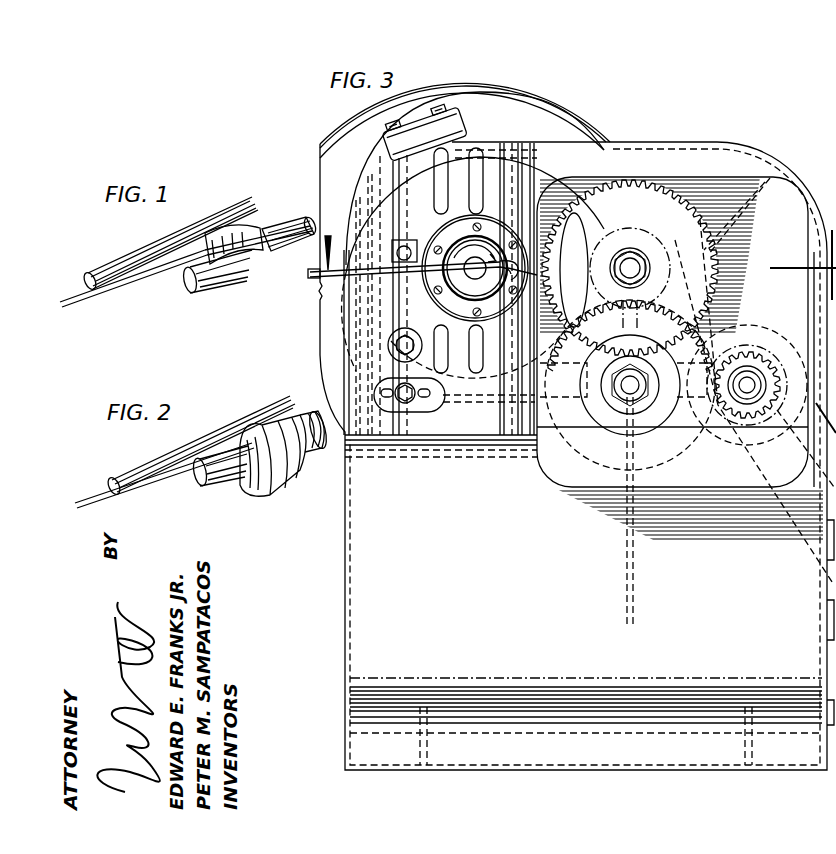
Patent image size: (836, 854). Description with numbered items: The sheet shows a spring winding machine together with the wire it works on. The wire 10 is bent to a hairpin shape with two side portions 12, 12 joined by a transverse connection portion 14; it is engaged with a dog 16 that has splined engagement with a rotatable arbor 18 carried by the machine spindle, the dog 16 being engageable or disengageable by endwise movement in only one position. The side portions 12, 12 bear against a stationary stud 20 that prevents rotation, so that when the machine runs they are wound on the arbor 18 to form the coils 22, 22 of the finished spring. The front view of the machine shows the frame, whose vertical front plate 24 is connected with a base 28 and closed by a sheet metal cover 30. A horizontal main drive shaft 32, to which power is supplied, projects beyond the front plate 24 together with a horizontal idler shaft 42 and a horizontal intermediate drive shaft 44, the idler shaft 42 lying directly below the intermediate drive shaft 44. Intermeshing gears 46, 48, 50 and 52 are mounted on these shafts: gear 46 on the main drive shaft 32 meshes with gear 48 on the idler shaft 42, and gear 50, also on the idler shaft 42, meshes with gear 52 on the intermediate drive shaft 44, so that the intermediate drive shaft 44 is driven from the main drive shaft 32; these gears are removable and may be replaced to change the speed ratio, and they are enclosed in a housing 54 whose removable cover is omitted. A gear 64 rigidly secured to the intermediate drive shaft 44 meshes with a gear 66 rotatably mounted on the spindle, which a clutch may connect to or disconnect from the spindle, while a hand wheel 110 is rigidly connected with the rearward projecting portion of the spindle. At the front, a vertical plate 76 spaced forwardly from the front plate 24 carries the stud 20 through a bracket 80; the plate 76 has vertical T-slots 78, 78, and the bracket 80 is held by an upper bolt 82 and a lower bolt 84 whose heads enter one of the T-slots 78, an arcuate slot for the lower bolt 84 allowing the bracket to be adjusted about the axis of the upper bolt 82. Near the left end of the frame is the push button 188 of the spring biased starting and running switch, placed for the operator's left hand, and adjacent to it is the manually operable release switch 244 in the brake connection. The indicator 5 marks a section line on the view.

In FIG. 3, the section line indicator 5 is at (333, 241).
In FIG. 1, the wire 10 is at (163, 279).
In FIG. 2, the wire 10 is at (80, 507).
In FIG. 3, the wire 10 is at (412, 266).
In FIG. 1, the side portions 12 is at (188, 248).
In FIG. 2, the side portions 12 is at (175, 475).
In FIG. 1, the transverse connection portion 14 is at (273, 252).
In FIG. 1, the dog 16 is at (255, 287).
In FIG. 2, the dog 16 is at (302, 490).
In FIG. 3, the dog 16 is at (537, 275).
In FIG. 1, the arbor 18 is at (188, 296).
In FIG. 2, the arbor 18 is at (220, 493).
In FIG. 3, the arbor 18 is at (477, 282).
In FIG. 1, the stud 20 is at (120, 258).
In FIG. 2, the stud 20 is at (138, 470).
In FIG. 3, the stud 20 is at (399, 250).
In FIG. 2, the coils 22 is at (253, 490).
In FIG. 3, the front plate 24 is at (712, 150).
In FIG. 3, the base 28 is at (345, 580).
In FIG. 3, the cover 30 is at (645, 142).
In FIG. 3, the main drive shaft 32 is at (748, 382).
In FIG. 3, the idler shaft 42 is at (628, 398).
In FIG. 3, the intermediate drive shaft 44 is at (633, 265).
In FIG. 3, the gear 46 is at (742, 350).
In FIG. 3, the gear 48 is at (658, 323).
In FIG. 3, the gear 50 is at (607, 378).
In FIG. 3, the gear 52 is at (690, 214).
In FIG. 3, the housing 54 is at (616, 178).
In FIG. 3, the gear 64 is at (614, 232).
In FIG. 3, the gear 66 is at (497, 158).
In FIG. 3, the vertical plate 76 is at (512, 440).
In FIG. 3, the T-slots 78 is at (403, 178).
In FIG. 3, the bracket 80 is at (390, 314).
In FIG. 3, the bolt 82 is at (390, 347).
In FIG. 3, the bolt 84 is at (398, 412).
In FIG. 3, the hand wheel 110 is at (562, 115).
In FIG. 3, the push button 188 is at (388, 128).
In FIG. 3, the release switch 244 is at (446, 103).